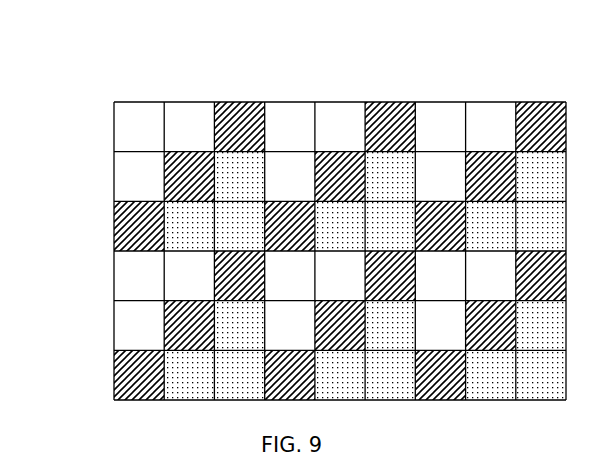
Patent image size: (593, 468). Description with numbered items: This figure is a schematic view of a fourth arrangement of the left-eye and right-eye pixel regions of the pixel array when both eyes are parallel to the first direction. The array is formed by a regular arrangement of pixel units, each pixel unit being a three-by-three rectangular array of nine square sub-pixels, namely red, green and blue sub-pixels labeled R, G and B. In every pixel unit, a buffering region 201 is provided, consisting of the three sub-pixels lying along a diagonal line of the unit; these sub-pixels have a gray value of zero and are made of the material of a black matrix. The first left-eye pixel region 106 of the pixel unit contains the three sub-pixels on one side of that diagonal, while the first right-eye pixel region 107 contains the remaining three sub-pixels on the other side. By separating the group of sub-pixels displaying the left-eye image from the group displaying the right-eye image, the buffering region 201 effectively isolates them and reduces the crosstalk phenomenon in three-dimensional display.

The first right-eye pixel region 107 is at (122, 118).
The buffering region 201 is at (222, 108).
The first left-eye pixel region 106 is at (114, 212).